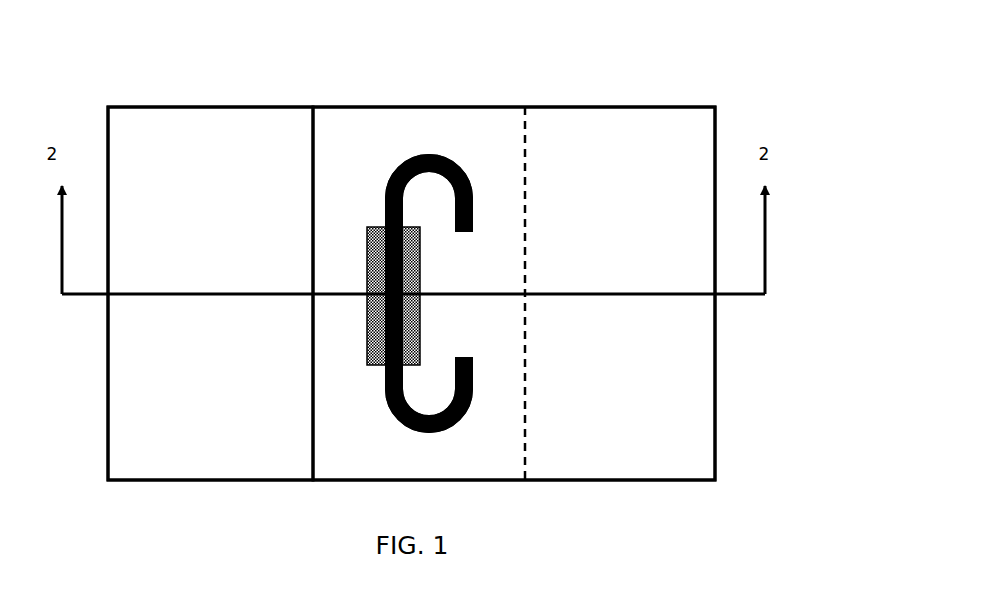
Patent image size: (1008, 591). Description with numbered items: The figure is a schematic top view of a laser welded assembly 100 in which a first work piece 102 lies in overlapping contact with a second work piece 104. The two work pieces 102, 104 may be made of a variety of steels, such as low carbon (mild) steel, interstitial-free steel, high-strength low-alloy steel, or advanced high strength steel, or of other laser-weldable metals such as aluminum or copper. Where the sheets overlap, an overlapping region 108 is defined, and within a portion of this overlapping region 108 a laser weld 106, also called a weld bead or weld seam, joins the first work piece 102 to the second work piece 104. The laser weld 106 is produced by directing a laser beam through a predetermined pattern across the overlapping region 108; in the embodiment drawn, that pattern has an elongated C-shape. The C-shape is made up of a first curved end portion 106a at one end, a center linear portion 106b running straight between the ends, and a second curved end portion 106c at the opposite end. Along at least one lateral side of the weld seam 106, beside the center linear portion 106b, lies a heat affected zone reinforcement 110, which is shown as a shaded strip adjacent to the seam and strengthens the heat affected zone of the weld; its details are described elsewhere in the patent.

The laser welded assembly 100 is at (818, 310).
The first work piece 102 is at (580, 150).
The second work piece 104 is at (222, 145).
The laser weld 106 is at (424, 147).
The first curved end portion 106a is at (447, 146).
The center linear portion 106b is at (440, 310).
The second curved end portion 106c is at (402, 442).
The overlapping region 108 is at (502, 448).
The heat affected zone (HAZ) reinforcement 110 is at (373, 271).